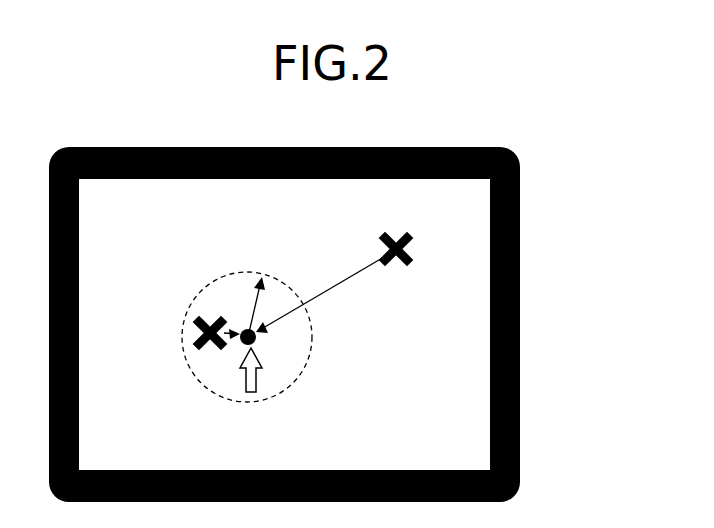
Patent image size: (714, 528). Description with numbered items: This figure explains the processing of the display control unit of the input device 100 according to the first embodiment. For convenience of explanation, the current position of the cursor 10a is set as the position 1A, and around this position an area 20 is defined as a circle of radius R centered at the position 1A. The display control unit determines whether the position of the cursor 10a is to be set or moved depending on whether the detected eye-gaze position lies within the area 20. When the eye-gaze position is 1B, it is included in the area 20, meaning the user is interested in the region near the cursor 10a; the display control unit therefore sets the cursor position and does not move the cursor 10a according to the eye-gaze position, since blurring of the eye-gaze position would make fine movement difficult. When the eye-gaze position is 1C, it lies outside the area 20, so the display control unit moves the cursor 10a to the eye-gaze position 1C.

The input device 100 is at (520, 167).
The area 20 is at (210, 280).
The position 1A is at (256, 335).
The eye-gaze position 1B is at (196, 337).
The eye-gaze position 1C is at (410, 245).
The radius R is at (248, 307).
The cursor 10a is at (257, 382).